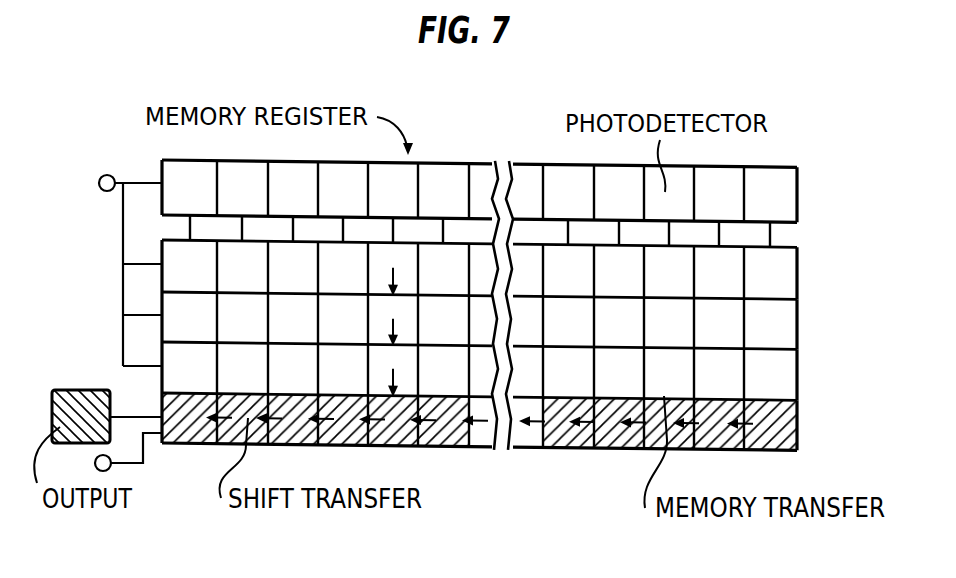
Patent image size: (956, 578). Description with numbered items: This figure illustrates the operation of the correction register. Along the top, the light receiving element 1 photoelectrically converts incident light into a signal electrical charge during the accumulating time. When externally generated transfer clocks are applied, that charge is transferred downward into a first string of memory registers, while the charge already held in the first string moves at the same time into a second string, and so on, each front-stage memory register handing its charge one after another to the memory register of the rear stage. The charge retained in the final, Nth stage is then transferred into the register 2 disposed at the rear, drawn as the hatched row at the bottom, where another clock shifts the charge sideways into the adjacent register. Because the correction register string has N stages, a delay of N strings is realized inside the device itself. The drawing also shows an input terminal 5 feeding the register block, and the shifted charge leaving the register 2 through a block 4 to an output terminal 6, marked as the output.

The light receiving element 1 is at (494, 203).
The register 2 is at (493, 421).
The output amplifier 4 is at (107, 397).
The input terminal 5 is at (118, 268).
The output terminal 6 is at (117, 455).